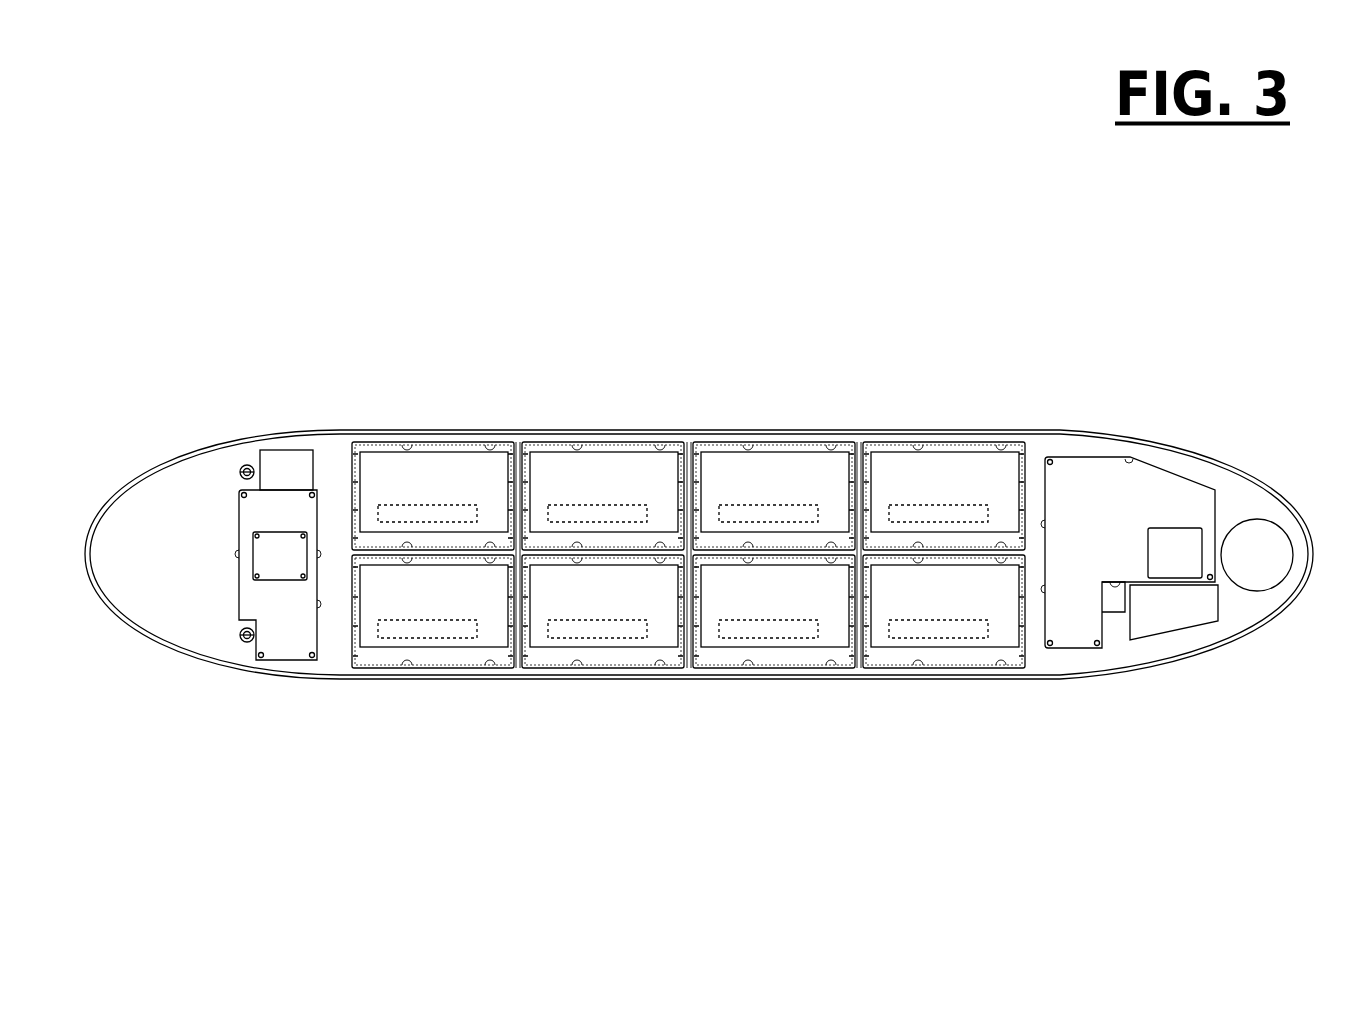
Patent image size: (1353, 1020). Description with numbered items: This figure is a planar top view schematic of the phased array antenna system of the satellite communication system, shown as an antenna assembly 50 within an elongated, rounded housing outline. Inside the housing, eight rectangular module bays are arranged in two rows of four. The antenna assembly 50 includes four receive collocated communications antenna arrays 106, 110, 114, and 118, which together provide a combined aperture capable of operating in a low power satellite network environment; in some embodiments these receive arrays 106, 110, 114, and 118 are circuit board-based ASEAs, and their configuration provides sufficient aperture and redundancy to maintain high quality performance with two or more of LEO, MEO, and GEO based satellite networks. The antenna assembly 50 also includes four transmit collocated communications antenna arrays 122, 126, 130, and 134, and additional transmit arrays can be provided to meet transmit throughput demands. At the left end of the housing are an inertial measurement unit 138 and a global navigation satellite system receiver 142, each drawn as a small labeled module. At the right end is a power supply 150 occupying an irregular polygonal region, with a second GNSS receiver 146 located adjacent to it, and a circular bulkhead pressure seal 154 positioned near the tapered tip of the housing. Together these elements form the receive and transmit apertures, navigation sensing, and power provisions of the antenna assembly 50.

The antenna assembly 50 is at (735, 352).
The receive collocated communications antenna array 106 is at (810, 477).
The receive collocated communications antenna array 110 is at (992, 462).
The receive collocated communications antenna array 114 is at (767, 602).
The receive collocated communications antenna array 118 is at (937, 602).
The transmit collocated communications antenna array 122 is at (443, 477).
The transmit collocated communications antenna array 126 is at (625, 462).
The transmit collocated communications antenna array 130 is at (400, 602).
The transmit collocated communications antenna array 134 is at (570, 602).
The inertial measurement unit 138 is at (282, 455).
The global navigation satellite system receiver 142 is at (278, 565).
The GNSS receiver 146 is at (1188, 537).
The power supply 150 is at (1097, 477).
The bulkhead pressure seal 154 is at (1259, 580).